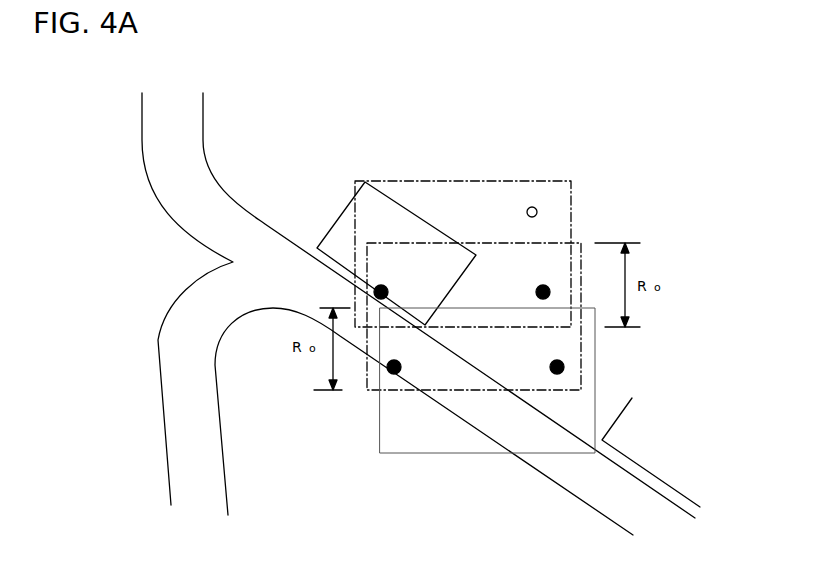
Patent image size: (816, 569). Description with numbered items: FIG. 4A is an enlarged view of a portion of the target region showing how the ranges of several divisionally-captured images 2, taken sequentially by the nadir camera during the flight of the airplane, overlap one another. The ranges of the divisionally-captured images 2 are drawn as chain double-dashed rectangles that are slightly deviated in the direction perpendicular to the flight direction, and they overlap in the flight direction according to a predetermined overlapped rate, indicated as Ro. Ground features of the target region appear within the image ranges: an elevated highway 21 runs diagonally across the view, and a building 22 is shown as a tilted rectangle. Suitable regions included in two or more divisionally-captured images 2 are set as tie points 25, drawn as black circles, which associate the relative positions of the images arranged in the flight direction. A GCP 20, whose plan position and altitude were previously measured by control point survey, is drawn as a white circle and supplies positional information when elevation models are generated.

The divisionally-captured image 2 is at (426, 195).
The GCP (ground control point) 20 is at (531, 207).
The elevated highway 21 is at (193, 147).
The building 22 is at (338, 238).
The tie point 25 is at (548, 298).